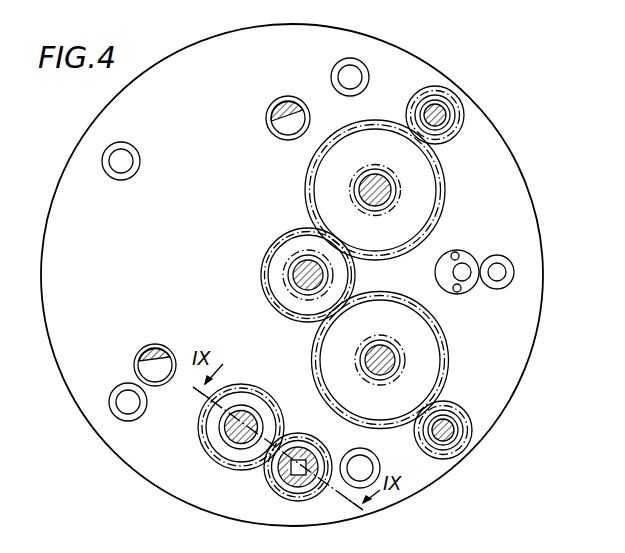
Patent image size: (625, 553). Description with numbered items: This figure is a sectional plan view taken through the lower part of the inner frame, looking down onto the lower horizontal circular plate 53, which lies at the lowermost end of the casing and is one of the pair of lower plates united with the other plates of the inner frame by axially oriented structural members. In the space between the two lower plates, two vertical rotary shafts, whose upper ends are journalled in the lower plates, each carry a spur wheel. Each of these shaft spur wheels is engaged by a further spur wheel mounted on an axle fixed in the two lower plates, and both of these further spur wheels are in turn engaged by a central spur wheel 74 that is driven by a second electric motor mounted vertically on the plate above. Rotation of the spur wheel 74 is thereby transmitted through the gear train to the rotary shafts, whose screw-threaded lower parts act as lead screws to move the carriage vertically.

The lower horizontal circular plate 53 is at (521, 232).
The spur wheel 74 is at (266, 268).